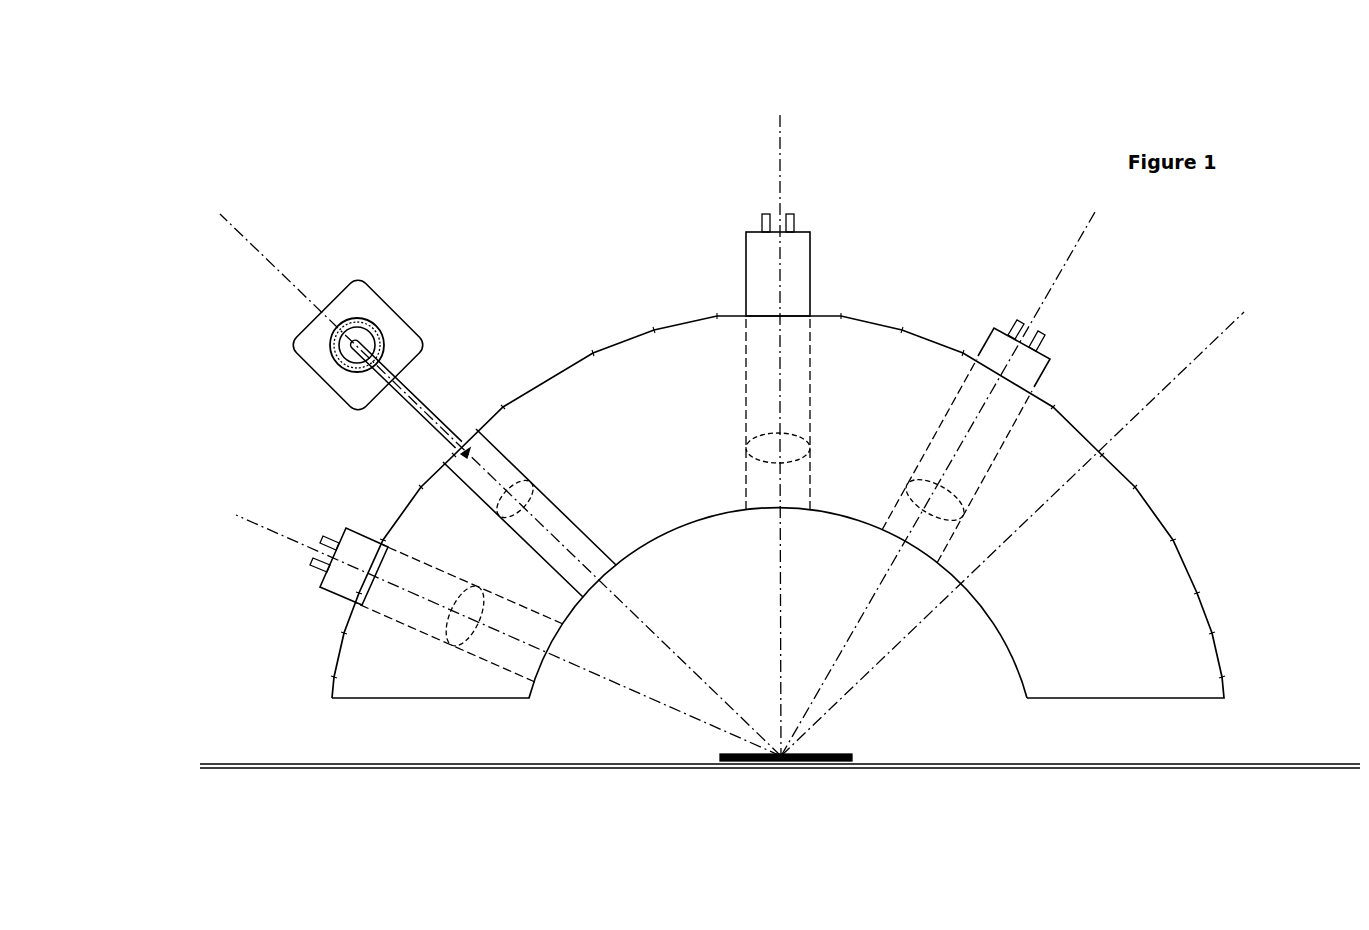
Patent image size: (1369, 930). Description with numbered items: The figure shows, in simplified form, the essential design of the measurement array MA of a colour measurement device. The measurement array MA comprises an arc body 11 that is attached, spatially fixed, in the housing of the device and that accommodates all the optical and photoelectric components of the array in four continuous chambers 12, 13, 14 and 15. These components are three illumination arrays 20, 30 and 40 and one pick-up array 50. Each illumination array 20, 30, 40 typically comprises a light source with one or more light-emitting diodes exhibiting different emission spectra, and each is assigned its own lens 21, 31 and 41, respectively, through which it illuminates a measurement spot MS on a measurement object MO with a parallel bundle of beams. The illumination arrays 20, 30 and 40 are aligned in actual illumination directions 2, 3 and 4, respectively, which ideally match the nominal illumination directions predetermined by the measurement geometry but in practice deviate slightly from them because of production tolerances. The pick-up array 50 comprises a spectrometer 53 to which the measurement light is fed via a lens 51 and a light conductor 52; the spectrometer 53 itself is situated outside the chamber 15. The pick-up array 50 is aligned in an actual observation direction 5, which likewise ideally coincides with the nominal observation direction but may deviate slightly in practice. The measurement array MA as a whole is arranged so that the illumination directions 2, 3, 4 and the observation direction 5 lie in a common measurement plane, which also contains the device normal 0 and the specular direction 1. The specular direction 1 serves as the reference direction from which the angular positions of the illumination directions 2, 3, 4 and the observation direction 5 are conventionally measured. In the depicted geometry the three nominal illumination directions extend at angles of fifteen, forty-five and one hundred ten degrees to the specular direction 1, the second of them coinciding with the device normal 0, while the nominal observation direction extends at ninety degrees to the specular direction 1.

The device normal 0 is at (771, 131).
The specular direction 1 is at (1203, 355).
The actual illumination direction 2 is at (868, 609).
The actual illumination direction 3 is at (779, 598).
The actual illumination direction 4 is at (625, 690).
The actual observation direction 5 is at (653, 630).
The arc body 11 is at (1197, 623).
The chamber 12 is at (940, 407).
The chamber 13 is at (755, 355).
The chamber 14 is at (422, 623).
The chamber 15 is at (500, 463).
The illumination array 20 is at (987, 330).
The lens 21 is at (953, 508).
The illumination array 30 is at (746, 253).
The lens 31 is at (760, 447).
The illumination array 40 is at (331, 599).
The lens 41 is at (473, 597).
The pick-up array 50 is at (337, 344).
The lens 51 is at (517, 490).
The light conductor 52 is at (426, 401).
The spectrometer 53 is at (402, 318).
The measurement array MA is at (531, 294).
The measurement spot MS is at (783, 765).
The measurement object MO is at (295, 770).